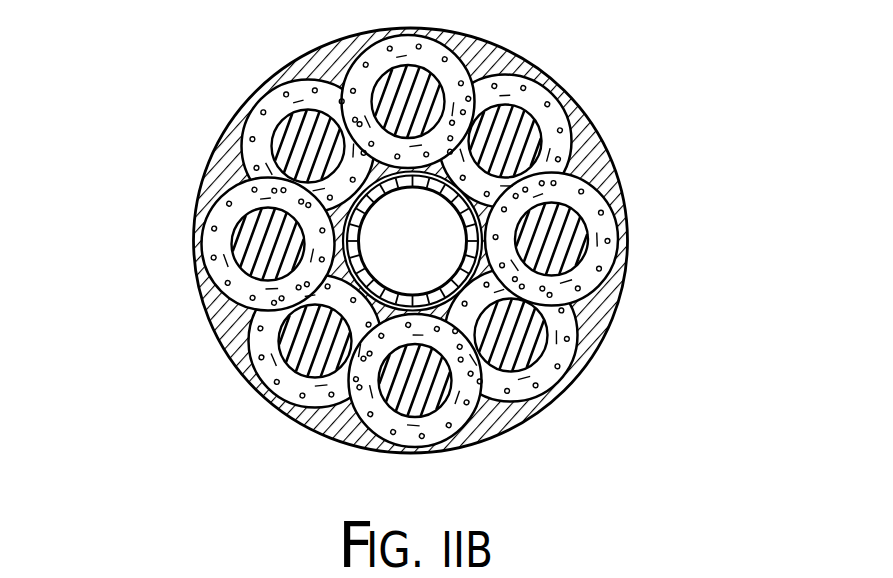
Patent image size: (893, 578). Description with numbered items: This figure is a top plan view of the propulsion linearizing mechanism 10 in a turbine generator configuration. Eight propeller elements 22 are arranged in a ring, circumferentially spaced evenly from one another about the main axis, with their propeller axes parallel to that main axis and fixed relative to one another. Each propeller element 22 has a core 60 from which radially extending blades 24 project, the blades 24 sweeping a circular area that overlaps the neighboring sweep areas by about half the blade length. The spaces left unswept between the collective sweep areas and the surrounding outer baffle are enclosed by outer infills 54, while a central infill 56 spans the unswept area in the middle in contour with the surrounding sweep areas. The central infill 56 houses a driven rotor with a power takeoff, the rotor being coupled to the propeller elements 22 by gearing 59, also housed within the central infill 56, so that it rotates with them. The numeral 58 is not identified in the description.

The propulsion linearizing mechanism 10 is at (397, 242).
The propeller element 22 is at (297, 142).
The blade 24 is at (288, 102).
The outer infill 54 is at (590, 162).
The central infill 56 is at (492, 208).
The central tube 58 is at (340, 243).
The gearing 59 is at (360, 292).
The core 60 is at (268, 150).